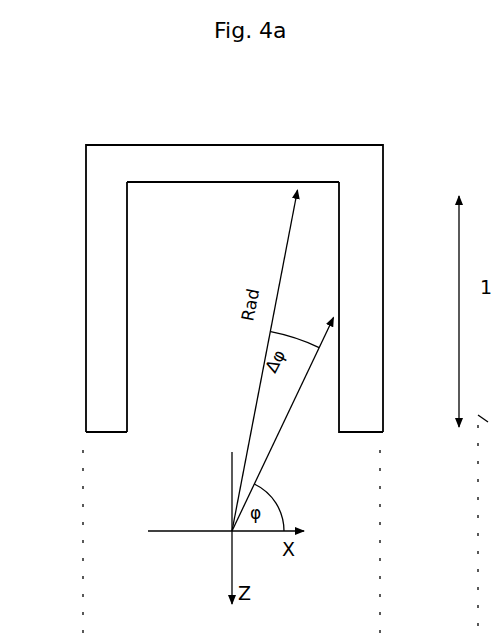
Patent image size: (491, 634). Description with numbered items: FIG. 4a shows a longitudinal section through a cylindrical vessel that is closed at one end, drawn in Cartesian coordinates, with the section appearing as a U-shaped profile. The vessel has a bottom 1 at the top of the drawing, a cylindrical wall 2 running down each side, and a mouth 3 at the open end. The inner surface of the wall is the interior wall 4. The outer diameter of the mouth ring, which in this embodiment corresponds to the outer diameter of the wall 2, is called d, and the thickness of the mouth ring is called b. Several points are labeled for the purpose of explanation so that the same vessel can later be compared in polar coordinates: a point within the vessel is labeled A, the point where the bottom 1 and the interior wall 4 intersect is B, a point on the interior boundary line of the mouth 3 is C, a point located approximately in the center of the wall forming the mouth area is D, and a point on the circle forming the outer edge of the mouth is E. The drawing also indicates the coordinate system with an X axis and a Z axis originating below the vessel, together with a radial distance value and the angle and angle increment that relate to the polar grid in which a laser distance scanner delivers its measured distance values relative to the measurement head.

The bottom 1 is at (108, 159).
The cylindrical wall 2 is at (96, 277).
The mouth 3 is at (100, 432).
The interior wall 4 is at (343, 251).
The point within the vessel A is at (253, 182).
The point where the bottom and interior wall intersect B is at (343, 182).
The point on the interior boundary line of the mouth C is at (339, 432).
The point in the center of the wall forming the mouth area D is at (360, 432).
The point on the outer edge of the mouth E is at (379, 432).